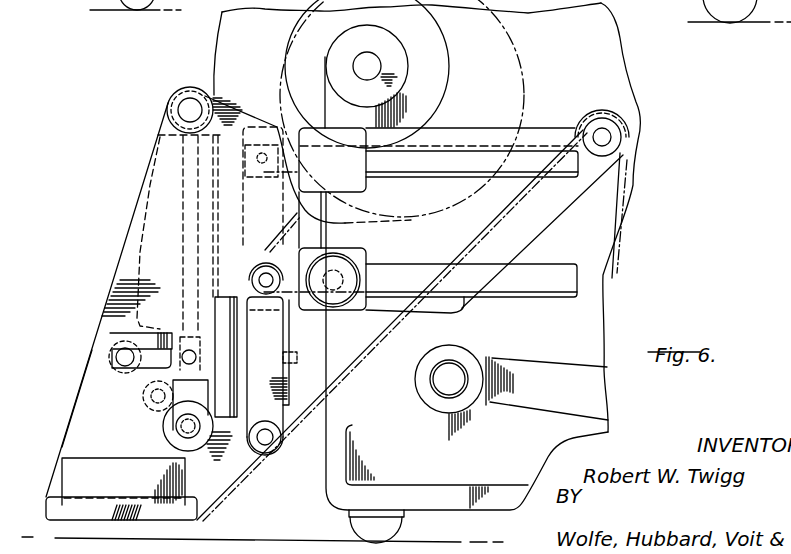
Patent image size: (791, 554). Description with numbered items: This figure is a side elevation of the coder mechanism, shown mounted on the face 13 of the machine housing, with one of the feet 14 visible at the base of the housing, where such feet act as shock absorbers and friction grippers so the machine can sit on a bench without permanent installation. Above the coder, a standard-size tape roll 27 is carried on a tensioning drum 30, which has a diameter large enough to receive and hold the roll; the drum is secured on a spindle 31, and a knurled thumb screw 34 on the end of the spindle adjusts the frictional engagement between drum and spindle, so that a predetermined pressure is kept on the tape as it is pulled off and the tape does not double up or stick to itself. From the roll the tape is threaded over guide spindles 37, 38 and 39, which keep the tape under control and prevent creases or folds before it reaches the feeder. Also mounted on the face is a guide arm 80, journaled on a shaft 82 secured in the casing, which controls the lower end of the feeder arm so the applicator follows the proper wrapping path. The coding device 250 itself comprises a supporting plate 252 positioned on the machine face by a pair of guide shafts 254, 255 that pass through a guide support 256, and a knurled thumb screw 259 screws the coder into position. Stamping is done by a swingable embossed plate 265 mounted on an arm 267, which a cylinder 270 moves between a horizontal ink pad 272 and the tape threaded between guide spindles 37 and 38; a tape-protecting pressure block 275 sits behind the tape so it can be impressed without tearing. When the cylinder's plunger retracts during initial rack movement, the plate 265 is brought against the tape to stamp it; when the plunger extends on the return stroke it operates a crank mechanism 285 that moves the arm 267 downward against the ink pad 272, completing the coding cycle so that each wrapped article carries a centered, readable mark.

The face of the housing 13 is at (593, 313).
The feet 14 is at (420, 527).
The tape roll 27 is at (527, 63).
The tensioning drum 30 is at (428, 92).
The spindle 31 is at (355, 64).
The knurled thumb screw 34 is at (396, 58).
The guide spindle 37 is at (266, 266).
The guide spindle 38 is at (265, 441).
The guide spindle 39 is at (611, 137).
The guide arm 80 is at (548, 340).
The shaft 82 is at (447, 383).
The coding device 250 is at (118, 250).
The supporting plate 252 is at (96, 403).
The guide shaft 254 is at (503, 178).
The guide shaft 255 is at (537, 298).
The guide support 256 is at (540, 223).
The knurled thumb screw 259 is at (321, 305).
The embossed plate 265 is at (221, 297).
The arm 267 is at (110, 333).
The cylinder 270 is at (153, 140).
The ink pad 272 is at (80, 470).
The pressure block 275 is at (283, 402).
The crank mechanism 285 is at (173, 433).